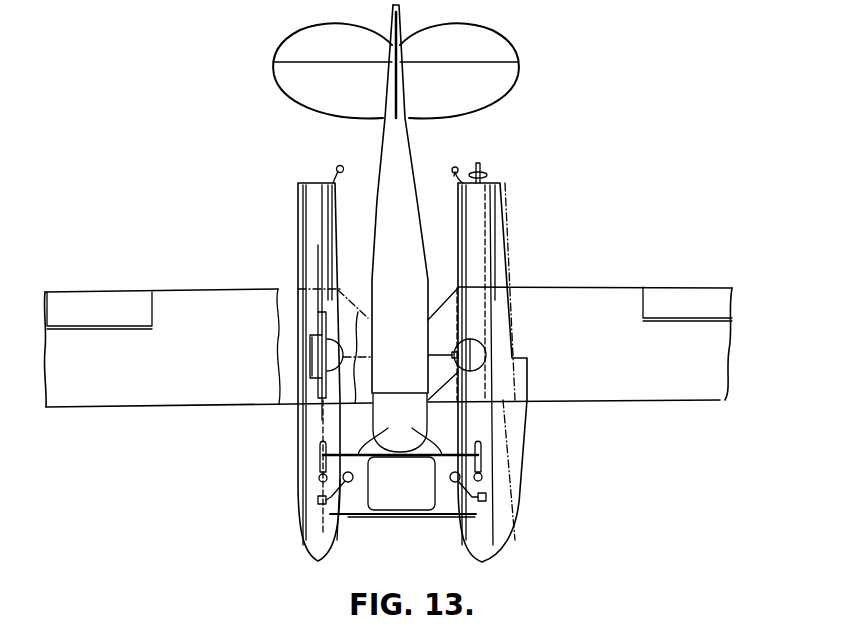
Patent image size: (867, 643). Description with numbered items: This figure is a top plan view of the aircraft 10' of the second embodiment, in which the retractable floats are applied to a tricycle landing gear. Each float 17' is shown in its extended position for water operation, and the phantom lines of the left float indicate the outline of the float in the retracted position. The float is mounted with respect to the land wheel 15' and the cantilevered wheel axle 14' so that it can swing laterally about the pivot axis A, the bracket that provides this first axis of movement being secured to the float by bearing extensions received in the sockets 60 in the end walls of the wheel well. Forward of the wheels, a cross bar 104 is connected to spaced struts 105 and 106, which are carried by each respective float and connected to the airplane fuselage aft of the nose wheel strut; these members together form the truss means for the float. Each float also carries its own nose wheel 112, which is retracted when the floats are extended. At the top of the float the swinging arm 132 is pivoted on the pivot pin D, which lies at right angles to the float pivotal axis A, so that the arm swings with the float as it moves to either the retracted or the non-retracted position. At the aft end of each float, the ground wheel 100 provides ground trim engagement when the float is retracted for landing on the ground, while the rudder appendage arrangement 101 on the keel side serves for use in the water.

The pivot axis A is at (318, 260).
The aircraft 10' is at (388, 328).
The socket 60 is at (318, 326).
The land wheel 15' is at (283, 356).
The wheel axle 14' is at (406, 348).
The cross bar 104 is at (400, 436).
The strut 105 is at (435, 468).
The nose wheel 112 is at (353, 479).
The swinging arm 132 is at (320, 468).
The pivot pin D is at (319, 480).
The strut 106 is at (344, 481).
The float 17' is at (345, 364).
The ground wheel 100 is at (456, 167).
The rudder appendage arrangement 101 is at (483, 166).